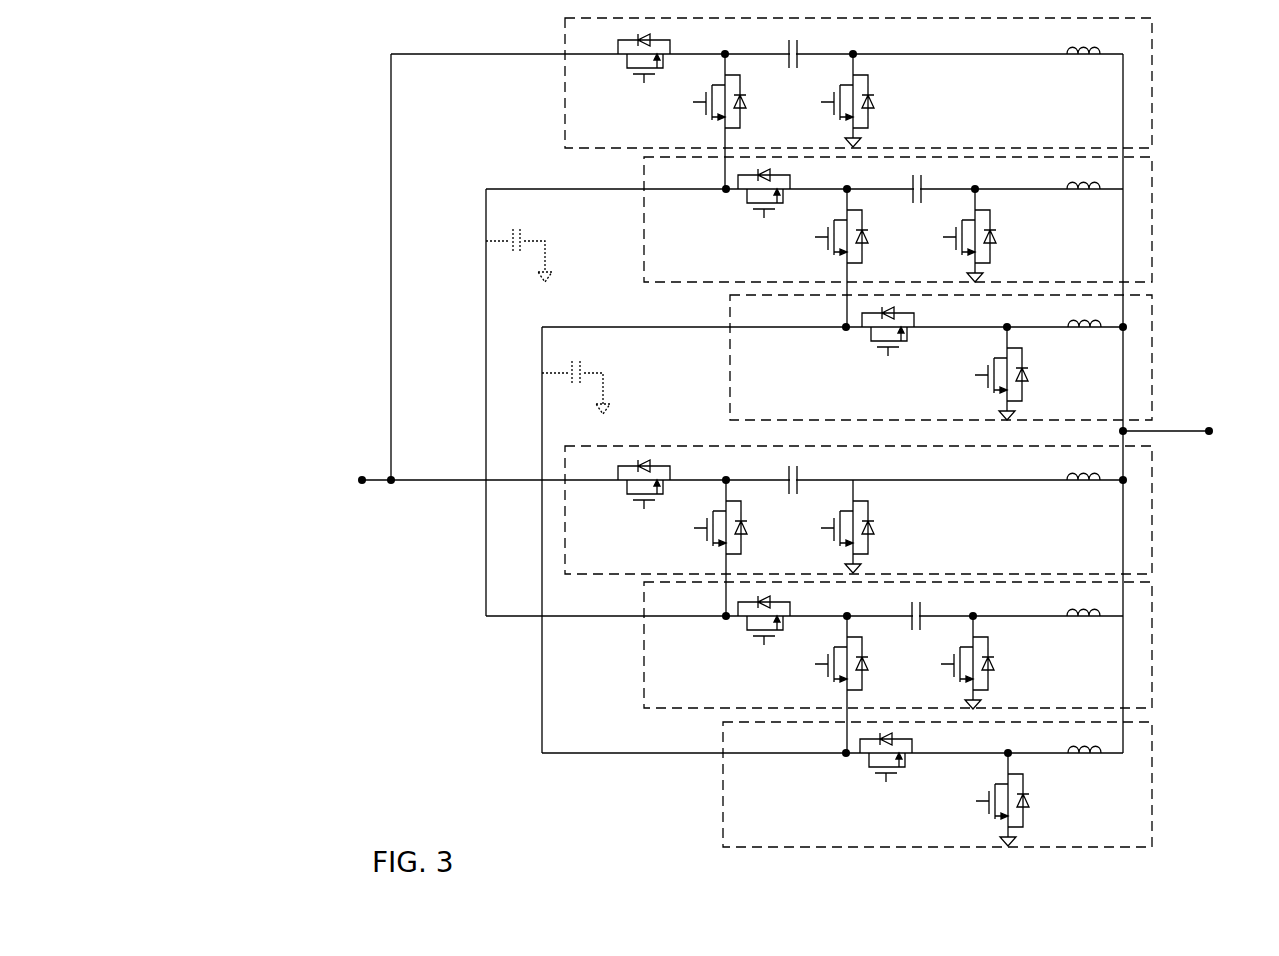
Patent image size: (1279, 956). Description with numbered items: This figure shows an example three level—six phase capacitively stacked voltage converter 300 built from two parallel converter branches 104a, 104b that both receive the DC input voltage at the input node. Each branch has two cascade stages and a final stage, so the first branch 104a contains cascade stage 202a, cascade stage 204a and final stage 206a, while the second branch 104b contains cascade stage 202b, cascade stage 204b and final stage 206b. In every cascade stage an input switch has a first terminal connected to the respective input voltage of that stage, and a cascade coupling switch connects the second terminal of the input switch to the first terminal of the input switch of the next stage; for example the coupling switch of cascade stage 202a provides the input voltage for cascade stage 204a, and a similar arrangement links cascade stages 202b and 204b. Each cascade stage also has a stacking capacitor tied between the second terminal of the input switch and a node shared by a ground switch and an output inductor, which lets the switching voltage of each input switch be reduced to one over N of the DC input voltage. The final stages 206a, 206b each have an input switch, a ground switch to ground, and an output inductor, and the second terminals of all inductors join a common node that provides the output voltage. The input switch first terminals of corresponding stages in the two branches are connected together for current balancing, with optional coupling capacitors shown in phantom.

The three level—six phase capacitively stacked voltage converter 300 is at (333, 83).
The parallel converter branch 104a is at (1158, 20).
The parallel converter branch 104b is at (1158, 449).
The first cascade stage 202a is at (771, 103).
The second cascade stage 204a is at (819, 242).
The final stage 206a is at (847, 357).
The first cascade stage 202b is at (757, 531).
The second cascade stage 204b is at (819, 667).
The final stage 206b is at (847, 784).